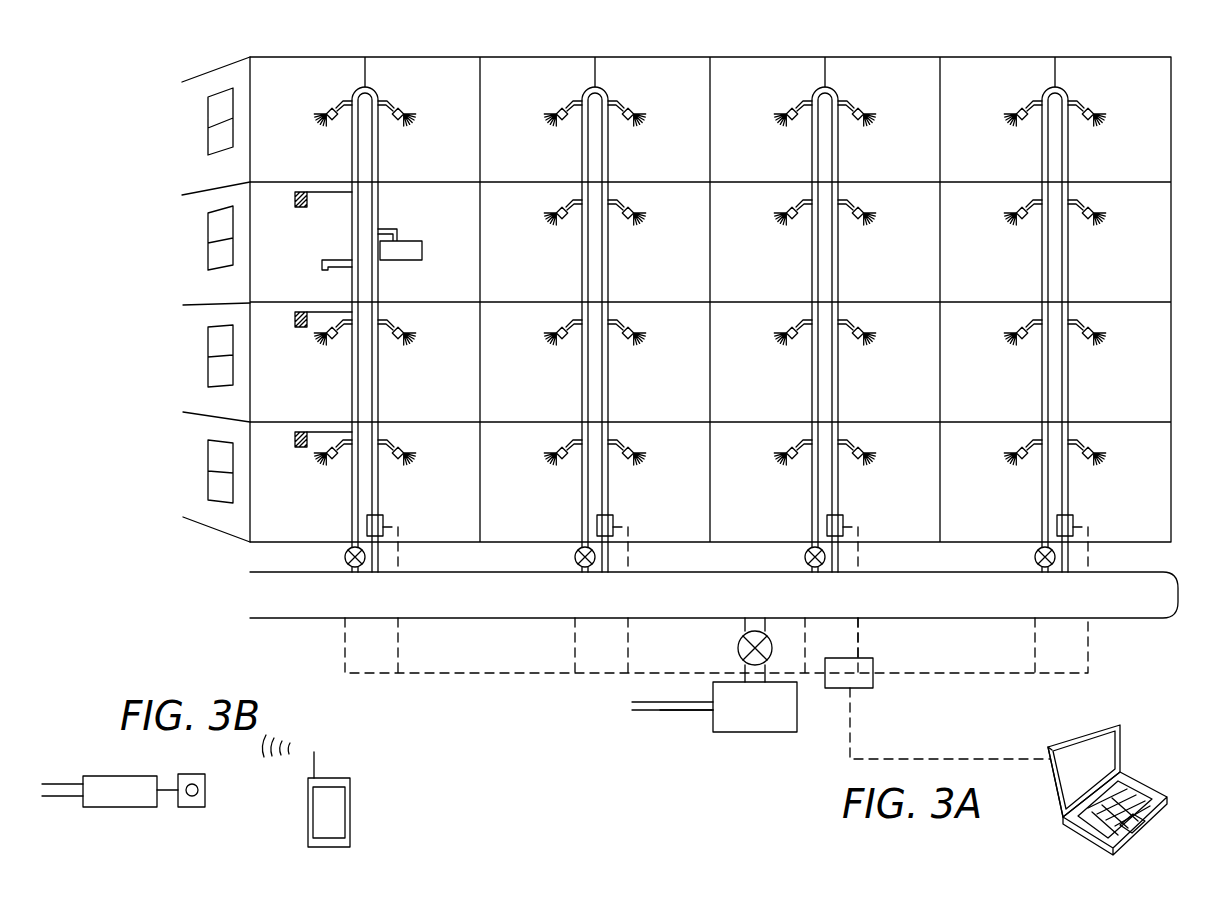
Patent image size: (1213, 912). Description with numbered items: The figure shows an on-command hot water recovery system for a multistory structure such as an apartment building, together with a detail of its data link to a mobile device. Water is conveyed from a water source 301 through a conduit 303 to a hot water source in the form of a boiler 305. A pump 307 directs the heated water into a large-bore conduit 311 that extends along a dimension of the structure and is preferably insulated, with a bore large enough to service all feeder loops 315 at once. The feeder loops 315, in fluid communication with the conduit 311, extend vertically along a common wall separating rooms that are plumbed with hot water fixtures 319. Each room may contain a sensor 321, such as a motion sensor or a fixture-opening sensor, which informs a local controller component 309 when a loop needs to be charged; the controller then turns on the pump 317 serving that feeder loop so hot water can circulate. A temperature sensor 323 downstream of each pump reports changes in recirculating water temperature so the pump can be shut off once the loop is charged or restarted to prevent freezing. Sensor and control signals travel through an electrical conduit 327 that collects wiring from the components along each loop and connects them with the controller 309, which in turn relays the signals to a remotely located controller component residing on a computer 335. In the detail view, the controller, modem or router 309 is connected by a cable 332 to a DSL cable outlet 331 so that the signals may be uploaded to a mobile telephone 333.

In FIG. 3A, the water source 301 is at (646, 706).
In FIG. 3A, the conduit 303 is at (675, 710).
In FIG. 3A, the boiler 305 is at (758, 732).
In FIG. 3A, the pump 307 is at (738, 648).
In FIG. 3A, the local controller component 309 is at (873, 685).
In FIG. 3B, the local controller component 309 is at (113, 775).
In FIG. 3A, the conduit 311 is at (955, 620).
In FIG. 3A, the feeder loop 315 is at (376, 91).
In FIG. 3A, the pump 317 is at (343, 557).
In FIG. 3A, the hot water fixture 319 is at (338, 108).
In FIG. 3A, the sensor 321 is at (293, 198).
In FIG. 3A, the temperature sensor 323 is at (365, 57).
In FIG. 3A, the electrical conduit 327 is at (397, 645).
In FIG. 3B, the DSL cable outlet 331 is at (200, 808).
In FIG. 3B, the cable 332 is at (172, 790).
In FIG. 3B, the mobile telephone 333 is at (350, 795).
In FIG. 3A, the computer 335 is at (1140, 775).